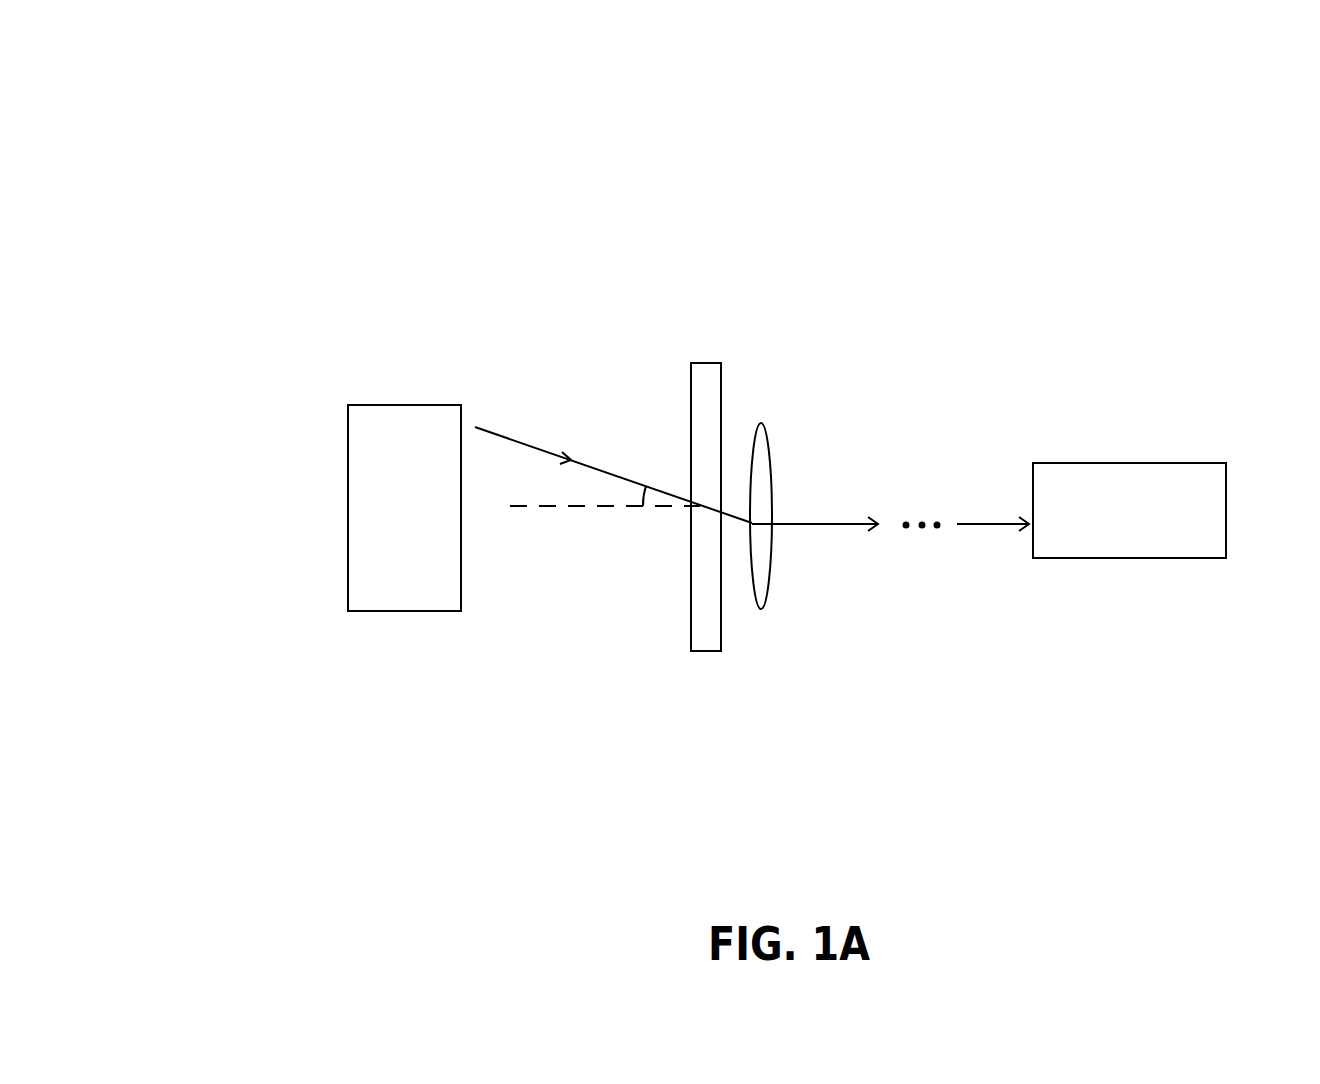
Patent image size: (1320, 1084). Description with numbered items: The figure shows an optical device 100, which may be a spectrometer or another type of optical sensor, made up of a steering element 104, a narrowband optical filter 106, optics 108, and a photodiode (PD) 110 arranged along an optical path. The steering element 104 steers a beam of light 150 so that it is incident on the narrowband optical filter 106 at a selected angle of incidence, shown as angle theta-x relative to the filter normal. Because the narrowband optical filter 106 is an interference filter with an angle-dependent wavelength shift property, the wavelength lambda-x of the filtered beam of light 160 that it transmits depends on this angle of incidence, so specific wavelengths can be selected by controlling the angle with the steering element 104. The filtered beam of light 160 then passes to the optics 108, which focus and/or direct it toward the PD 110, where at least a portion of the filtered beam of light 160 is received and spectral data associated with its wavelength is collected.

The optical device 100 is at (276, 62).
The steering element 104 is at (404, 508).
The narrowband optical filter 106 is at (710, 362).
The optics 108 is at (762, 606).
The photodiode 110 is at (1129, 510).
The beam of light 150 is at (542, 447).
The filtered beam of light 160 is at (962, 568).